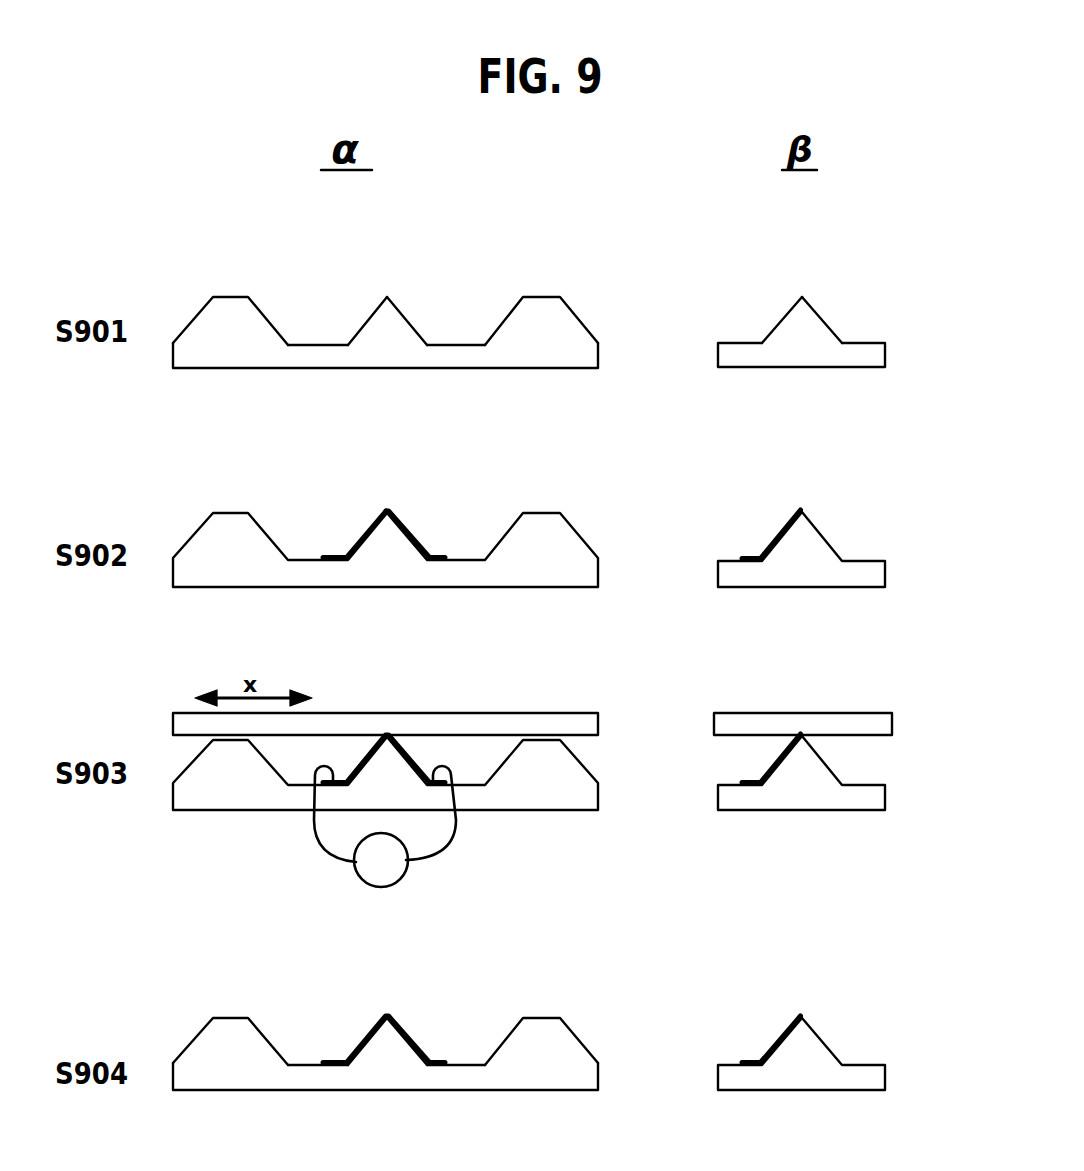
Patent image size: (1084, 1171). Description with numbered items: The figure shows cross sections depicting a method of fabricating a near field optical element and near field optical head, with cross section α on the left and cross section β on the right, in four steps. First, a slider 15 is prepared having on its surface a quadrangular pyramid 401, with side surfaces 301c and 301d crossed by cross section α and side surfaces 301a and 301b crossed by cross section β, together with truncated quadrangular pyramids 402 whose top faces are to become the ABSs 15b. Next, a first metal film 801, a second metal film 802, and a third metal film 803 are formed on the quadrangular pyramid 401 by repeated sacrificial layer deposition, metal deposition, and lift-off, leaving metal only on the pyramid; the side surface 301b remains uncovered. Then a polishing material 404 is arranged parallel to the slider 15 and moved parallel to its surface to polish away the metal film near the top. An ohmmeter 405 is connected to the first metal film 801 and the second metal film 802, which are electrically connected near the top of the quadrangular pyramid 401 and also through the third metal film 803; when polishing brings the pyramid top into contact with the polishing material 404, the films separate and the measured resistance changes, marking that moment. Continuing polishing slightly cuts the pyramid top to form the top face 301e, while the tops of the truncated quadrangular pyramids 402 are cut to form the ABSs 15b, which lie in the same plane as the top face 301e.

The slider 15 is at (763, 357).
The ABS 15b is at (232, 1018).
The side surface 301a is at (785, 318).
The side surface 301b is at (823, 318).
The side surface 301c is at (370, 318).
The side surface 301d is at (450, 305).
The top face 301e is at (390, 1019).
The quadrangular pyramid 401 is at (385, 284).
The truncated quadrangular pyramid 402 is at (223, 318).
The polishing material 404 is at (577, 718).
The ohmmeter 405 is at (408, 862).
The first metal film 801 is at (353, 542).
The second metal film 802 is at (413, 537).
The third metal film 803 is at (775, 542).